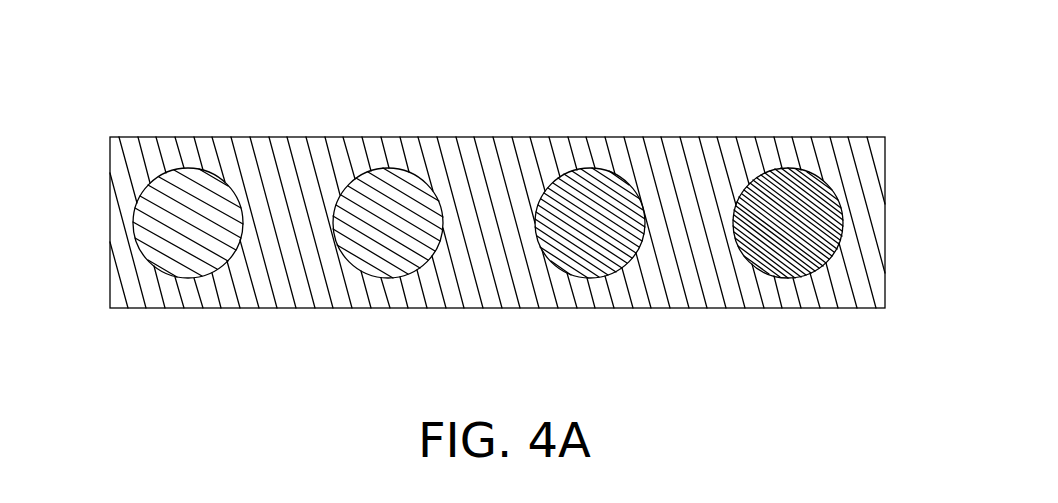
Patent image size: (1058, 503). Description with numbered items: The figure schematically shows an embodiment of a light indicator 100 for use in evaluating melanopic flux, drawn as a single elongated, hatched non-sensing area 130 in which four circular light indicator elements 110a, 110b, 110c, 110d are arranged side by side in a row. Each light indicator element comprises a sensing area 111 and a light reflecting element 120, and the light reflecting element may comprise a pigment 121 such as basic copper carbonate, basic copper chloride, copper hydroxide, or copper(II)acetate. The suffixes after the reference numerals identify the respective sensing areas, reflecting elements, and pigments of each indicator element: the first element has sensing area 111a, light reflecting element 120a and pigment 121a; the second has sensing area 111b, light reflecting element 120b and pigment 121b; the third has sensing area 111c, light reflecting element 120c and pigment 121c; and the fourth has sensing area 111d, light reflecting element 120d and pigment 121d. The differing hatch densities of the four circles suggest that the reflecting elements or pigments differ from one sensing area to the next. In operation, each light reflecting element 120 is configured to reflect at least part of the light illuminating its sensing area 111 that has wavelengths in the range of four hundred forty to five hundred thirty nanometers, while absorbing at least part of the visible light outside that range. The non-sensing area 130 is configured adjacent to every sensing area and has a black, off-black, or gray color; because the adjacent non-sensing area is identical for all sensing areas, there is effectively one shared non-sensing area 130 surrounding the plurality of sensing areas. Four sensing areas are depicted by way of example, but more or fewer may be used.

The light indicator 100 is at (104, 174).
The non-sensing area 130 is at (865, 155).
The light indicator element 110a is at (165, 185).
The light indicator element 110b is at (368, 193).
The light indicator element 110c is at (640, 200).
The light indicator element 110d is at (825, 173).
The sensing area 111 is at (540, 217).
The light reflecting element 120 is at (540, 217).
The pigment 121 is at (790, 168).
The sensing area 111a is at (267, 276).
The light reflecting element 120a is at (267, 276).
The pigment 121a is at (172, 259).
The sensing area 111b is at (468, 276).
The light reflecting element 120b is at (468, 276).
The pigment 121b is at (372, 258).
The sensing area 111c is at (644, 293).
The light reflecting element 120c is at (644, 293).
The pigment 121c is at (593, 237).
The sensing area 111d is at (840, 283).
The light reflecting element 120d is at (840, 283).
The pigment 121d is at (788, 248).